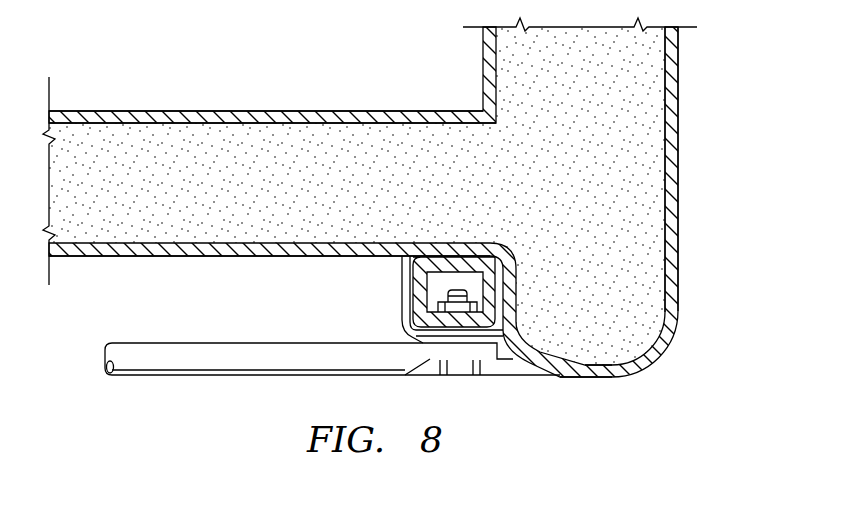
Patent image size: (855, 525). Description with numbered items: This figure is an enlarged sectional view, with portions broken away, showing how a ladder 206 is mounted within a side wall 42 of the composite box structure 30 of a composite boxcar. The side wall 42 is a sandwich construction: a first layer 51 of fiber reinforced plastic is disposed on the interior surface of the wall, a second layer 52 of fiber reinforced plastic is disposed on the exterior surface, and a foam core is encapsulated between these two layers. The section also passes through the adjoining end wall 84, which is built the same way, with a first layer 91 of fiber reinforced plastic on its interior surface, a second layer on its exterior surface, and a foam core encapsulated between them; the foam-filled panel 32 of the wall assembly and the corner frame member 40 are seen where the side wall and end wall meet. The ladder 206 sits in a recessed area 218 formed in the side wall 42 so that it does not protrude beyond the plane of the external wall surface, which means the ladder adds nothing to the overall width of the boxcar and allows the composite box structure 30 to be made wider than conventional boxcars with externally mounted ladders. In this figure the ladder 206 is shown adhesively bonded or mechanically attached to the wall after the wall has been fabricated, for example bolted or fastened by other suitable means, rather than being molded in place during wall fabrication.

The composite box structure 30 is at (658, 386).
The foam core panel 32 is at (296, 79).
The frame member 40 is at (682, 163).
The side wall 42 is at (131, 262).
The first layer of fiber reinforced plastic 51 is at (150, 111).
The second layer of fiber reinforced plastic 52 is at (242, 257).
The end wall 84 is at (678, 247).
The first layer of fiber reinforced plastic 91 is at (483, 80).
The ladder 206 is at (186, 383).
The recessed area 218 is at (337, 281).